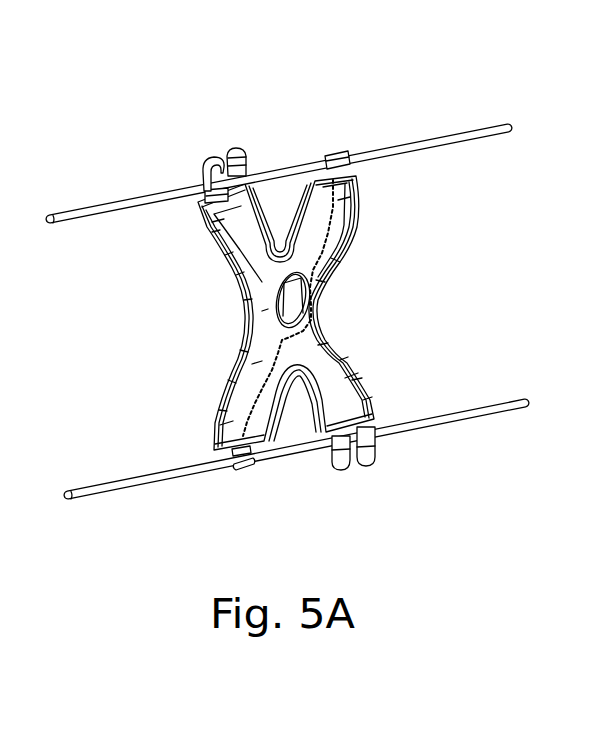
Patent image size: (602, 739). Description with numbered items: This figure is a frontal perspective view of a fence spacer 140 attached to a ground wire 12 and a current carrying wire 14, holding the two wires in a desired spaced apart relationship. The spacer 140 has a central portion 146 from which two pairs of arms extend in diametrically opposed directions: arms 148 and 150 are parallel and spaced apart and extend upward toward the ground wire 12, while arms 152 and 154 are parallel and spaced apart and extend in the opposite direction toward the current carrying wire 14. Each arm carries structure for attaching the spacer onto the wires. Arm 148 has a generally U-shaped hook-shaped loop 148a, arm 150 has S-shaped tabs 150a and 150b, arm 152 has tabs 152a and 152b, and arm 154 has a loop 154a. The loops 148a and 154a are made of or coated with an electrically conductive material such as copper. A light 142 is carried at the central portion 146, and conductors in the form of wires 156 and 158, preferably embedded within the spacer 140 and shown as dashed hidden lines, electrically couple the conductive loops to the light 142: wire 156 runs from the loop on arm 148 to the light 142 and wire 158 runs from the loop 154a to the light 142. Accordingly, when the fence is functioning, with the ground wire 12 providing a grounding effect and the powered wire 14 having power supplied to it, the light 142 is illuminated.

The ground wire 12 is at (415, 140).
The current carrying wire 14 is at (453, 424).
The fence spacer 140 is at (313, 314).
The light 142 is at (296, 300).
The central portion 146 is at (270, 312).
The arm 148 is at (345, 216).
The hook-shaped loop 148a is at (335, 151).
The arm 150 is at (217, 239).
The S-shaped tab 150a is at (233, 148).
The S-shaped tab 150b is at (207, 163).
The arm 152 is at (350, 388).
The tab 152a is at (340, 470).
The tab 152b is at (375, 465).
The arm 154 is at (220, 432).
The loop 154a is at (242, 470).
The wire 156 is at (334, 247).
The wire 158 is at (262, 365).